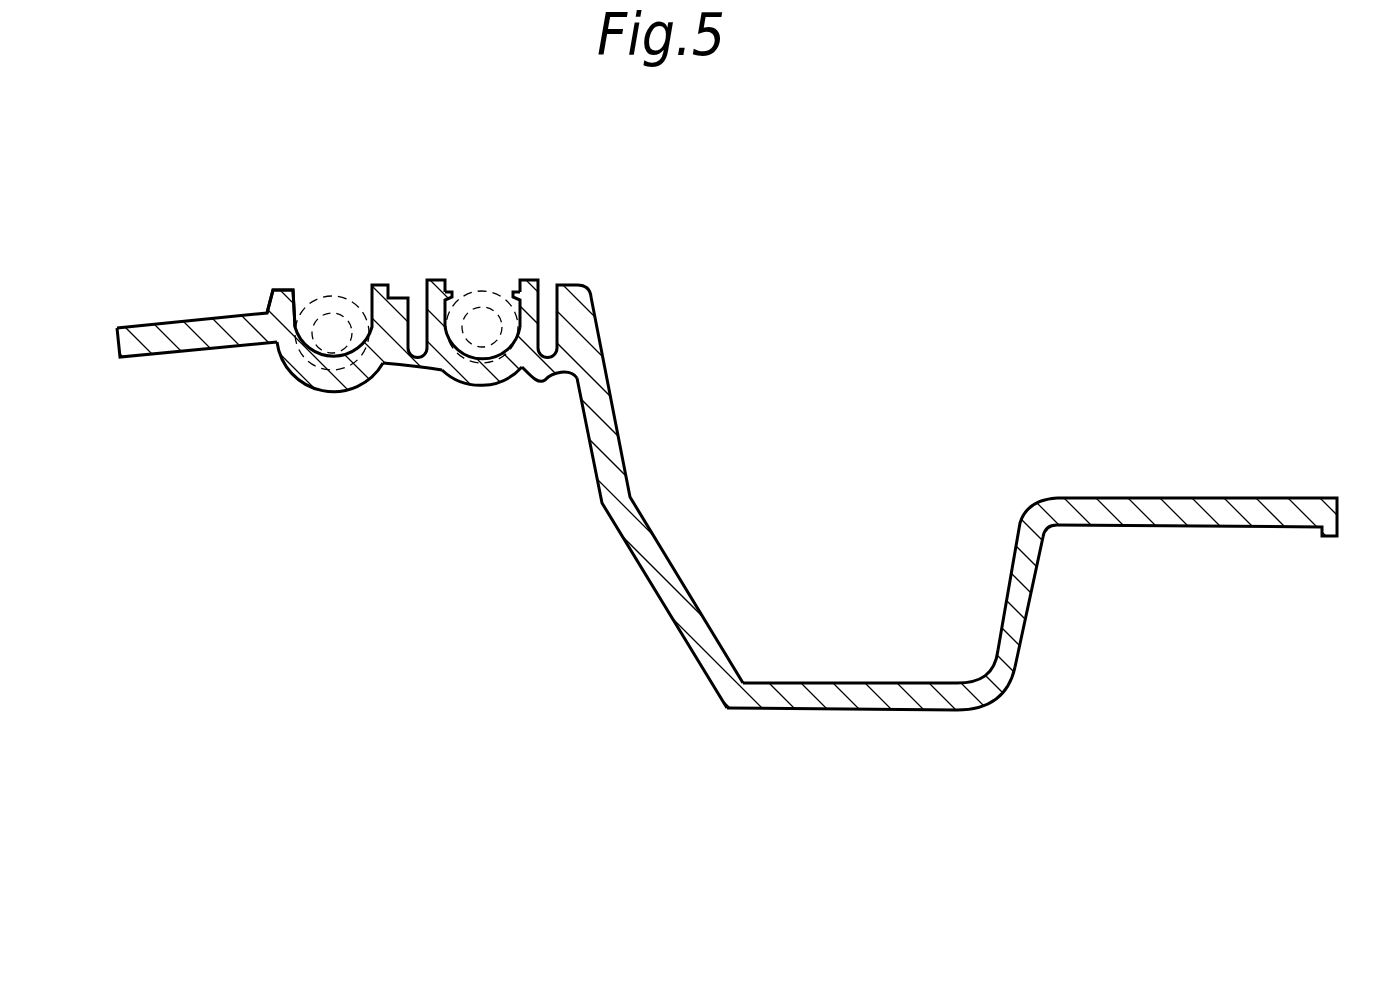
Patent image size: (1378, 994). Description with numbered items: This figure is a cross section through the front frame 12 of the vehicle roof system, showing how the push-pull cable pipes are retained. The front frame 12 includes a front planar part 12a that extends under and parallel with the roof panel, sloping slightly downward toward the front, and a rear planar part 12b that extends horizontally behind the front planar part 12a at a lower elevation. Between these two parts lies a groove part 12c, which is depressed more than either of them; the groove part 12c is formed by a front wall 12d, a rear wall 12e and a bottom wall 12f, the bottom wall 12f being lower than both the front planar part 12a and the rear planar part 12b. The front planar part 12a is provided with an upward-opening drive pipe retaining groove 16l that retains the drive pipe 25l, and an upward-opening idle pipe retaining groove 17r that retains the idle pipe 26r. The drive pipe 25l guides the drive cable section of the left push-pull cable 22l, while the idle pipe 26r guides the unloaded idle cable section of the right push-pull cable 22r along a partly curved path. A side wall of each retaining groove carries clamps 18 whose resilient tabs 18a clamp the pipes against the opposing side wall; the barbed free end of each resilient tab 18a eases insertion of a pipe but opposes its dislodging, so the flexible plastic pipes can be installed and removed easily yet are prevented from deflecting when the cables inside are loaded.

The front frame 12 is at (983, 198).
The front planar part 12a is at (178, 318).
The rear planar part 12b is at (1170, 498).
The groove part 12c is at (844, 440).
The front wall 12d is at (612, 403).
The rear wall 12e is at (1005, 582).
The bottom wall 12f is at (828, 687).
The drive pipe retaining groove 16l is at (300, 292).
The idle pipe retaining groove 17r is at (470, 290).
The clamp 18 is at (552, 218).
The resilient tab 18a is at (450, 292).
The left push-pull cable 22l is at (325, 340).
The right push-pull cable 22r is at (470, 340).
The drive pipe 25l is at (327, 293).
The idle pipe 26r is at (497, 290).